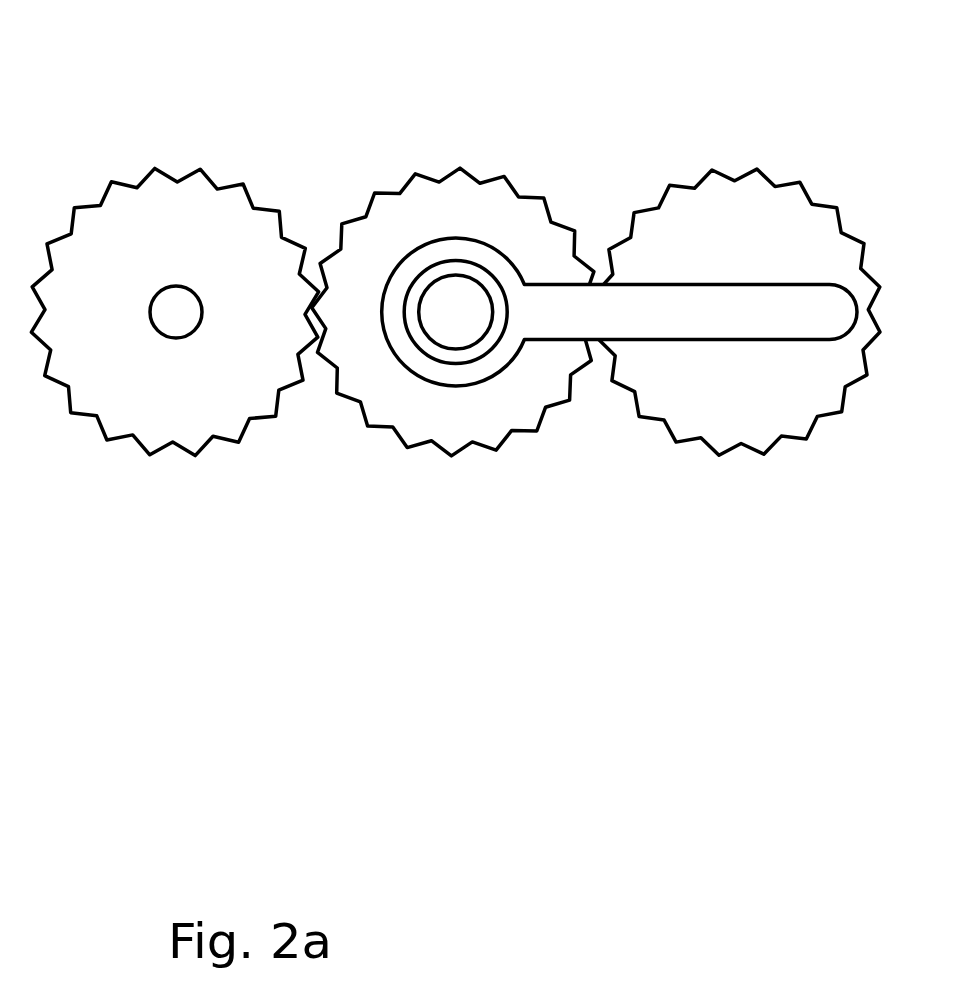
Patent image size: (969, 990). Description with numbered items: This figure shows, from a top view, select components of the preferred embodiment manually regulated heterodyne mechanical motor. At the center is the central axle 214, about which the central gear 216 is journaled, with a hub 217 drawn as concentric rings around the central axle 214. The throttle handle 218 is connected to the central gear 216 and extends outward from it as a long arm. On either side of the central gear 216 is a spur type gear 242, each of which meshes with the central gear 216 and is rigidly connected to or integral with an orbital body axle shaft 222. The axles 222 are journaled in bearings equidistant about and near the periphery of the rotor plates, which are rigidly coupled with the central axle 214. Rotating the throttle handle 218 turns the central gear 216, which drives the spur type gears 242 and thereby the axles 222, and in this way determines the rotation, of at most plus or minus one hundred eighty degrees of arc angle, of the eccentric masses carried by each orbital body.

The spur type gear 242 is at (132, 248).
The axle 222 is at (178, 313).
The central gear 216 is at (468, 427).
The hub 217 is at (455, 268).
The central axle 214 is at (446, 330).
The throttle handle 218 is at (558, 310).